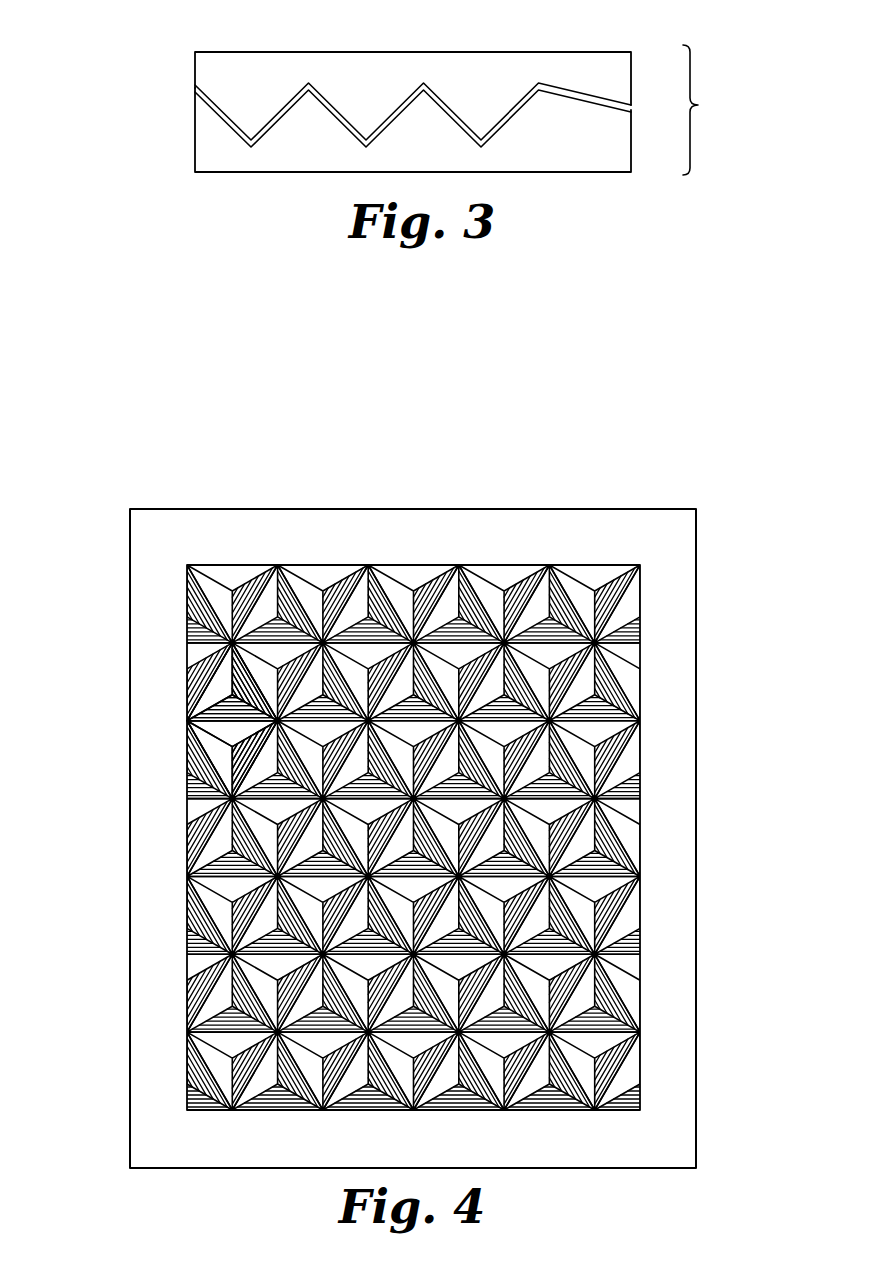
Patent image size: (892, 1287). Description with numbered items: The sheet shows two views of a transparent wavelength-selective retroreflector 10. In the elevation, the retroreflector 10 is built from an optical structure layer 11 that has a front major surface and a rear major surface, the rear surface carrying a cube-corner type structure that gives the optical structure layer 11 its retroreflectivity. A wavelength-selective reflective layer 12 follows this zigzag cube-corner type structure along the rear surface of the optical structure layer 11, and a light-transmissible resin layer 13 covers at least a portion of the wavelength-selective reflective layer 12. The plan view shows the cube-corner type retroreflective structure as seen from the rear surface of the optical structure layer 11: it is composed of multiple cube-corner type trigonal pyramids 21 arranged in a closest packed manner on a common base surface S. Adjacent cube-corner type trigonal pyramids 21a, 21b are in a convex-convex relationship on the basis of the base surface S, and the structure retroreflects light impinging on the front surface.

In FIG. 3, the transparent wavelength-selective retroreflector 10 is at (708, 110).
In FIG. 3, the optical structure layer 11 is at (623, 73).
In FIG. 3, the wavelength-selective reflective layer 12 is at (630, 107).
In FIG. 3, the light-transmissible resin layer 13 is at (623, 150).
In FIG. 4, the cube-corner type trigonal pyramids 21 is at (583, 575).
In FIG. 4, the cube-corner type trigonal pyramid 21a is at (212, 695).
In FIG. 4, the cube-corner type trigonal pyramid 21b is at (213, 747).
In FIG. 4, the base surface S is at (690, 547).